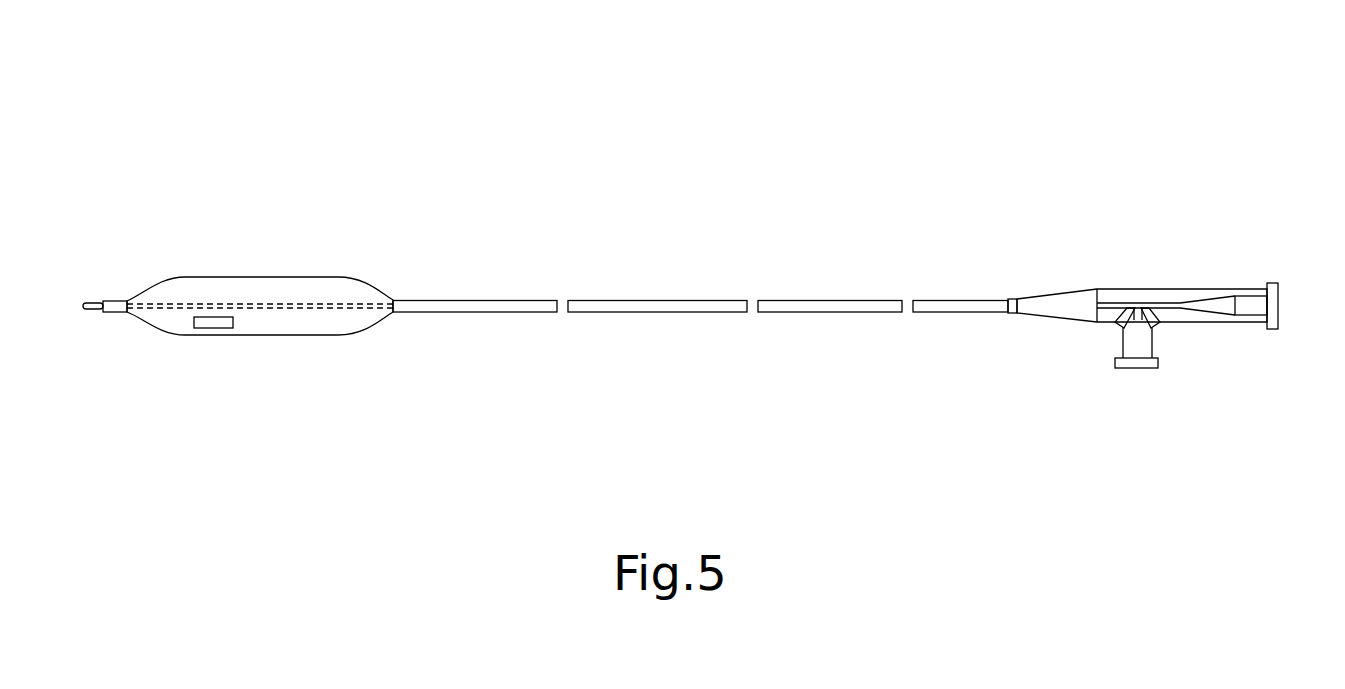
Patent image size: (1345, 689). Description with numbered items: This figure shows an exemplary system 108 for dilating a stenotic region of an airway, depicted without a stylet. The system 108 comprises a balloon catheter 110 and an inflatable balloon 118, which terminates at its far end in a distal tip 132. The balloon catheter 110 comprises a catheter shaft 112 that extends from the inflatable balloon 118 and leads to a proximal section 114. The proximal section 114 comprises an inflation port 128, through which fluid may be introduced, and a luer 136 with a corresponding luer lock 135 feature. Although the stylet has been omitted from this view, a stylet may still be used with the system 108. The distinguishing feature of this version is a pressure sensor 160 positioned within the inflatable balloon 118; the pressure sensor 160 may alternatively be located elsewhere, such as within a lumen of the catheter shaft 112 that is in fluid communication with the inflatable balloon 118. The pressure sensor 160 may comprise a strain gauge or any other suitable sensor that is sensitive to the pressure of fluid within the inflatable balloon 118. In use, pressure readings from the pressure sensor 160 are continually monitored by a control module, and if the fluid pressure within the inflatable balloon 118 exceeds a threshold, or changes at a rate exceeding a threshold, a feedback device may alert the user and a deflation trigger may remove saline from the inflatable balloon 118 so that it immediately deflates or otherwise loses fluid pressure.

The system 108 is at (975, 110).
The balloon catheter 110 is at (665, 203).
The catheter shaft 112 is at (857, 298).
The proximal section 114 is at (1117, 292).
The inflatable balloon 118 is at (265, 280).
The inflation port 128 is at (1122, 345).
The distal tip 132 is at (89, 301).
The luer lock 135 is at (1252, 300).
The luer 136 is at (1253, 325).
The pressure sensor 160 is at (215, 325).